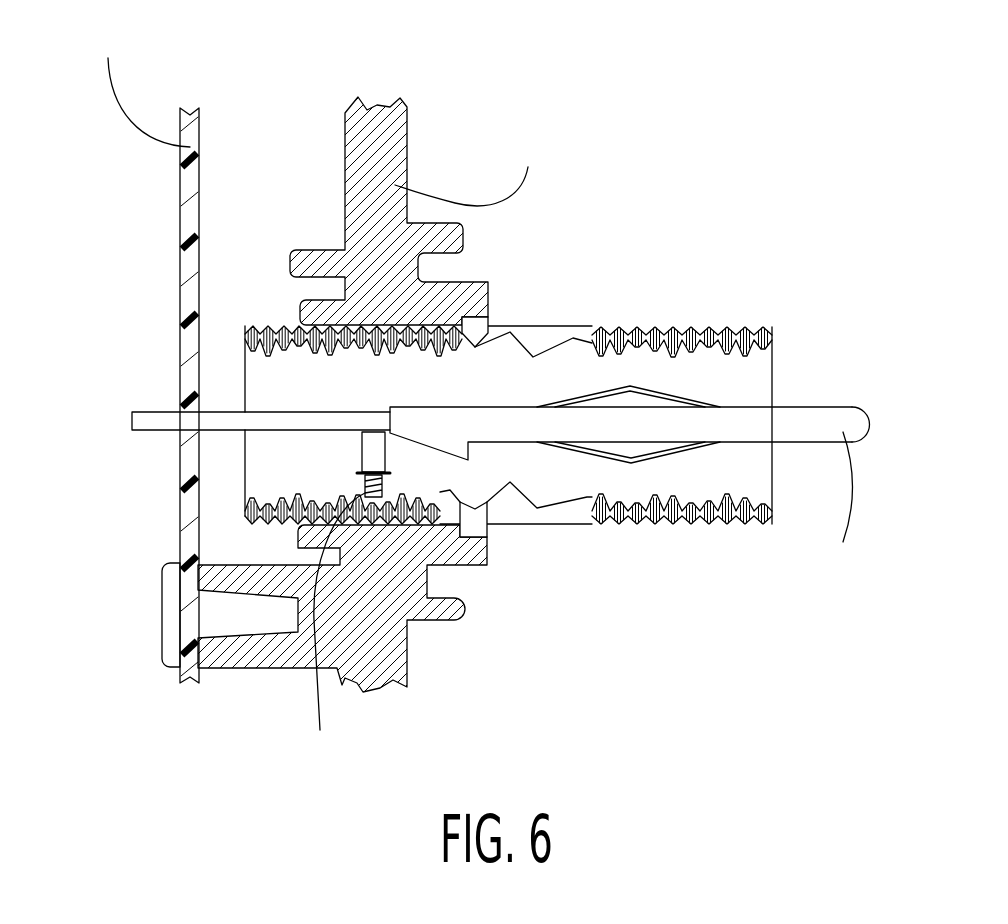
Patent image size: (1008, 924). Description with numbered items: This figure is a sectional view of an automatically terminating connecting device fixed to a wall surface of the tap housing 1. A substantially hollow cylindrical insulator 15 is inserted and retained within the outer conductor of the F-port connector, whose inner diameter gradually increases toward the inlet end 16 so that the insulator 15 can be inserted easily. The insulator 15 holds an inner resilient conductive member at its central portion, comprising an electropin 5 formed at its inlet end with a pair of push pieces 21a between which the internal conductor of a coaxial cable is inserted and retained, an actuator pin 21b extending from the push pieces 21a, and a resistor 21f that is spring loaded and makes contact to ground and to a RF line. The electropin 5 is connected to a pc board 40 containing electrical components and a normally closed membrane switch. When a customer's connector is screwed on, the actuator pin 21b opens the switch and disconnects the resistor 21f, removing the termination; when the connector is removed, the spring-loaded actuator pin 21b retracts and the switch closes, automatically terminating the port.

The tap housing 1 is at (378, 123).
The pc board 40 is at (185, 180).
The electropin 5 is at (185, 422).
The inlet end 16 is at (740, 370).
The push pieces 21a is at (720, 403).
The insulator 15 is at (722, 406).
The actuator pin 21b is at (820, 428).
The resistor 21f is at (375, 450).